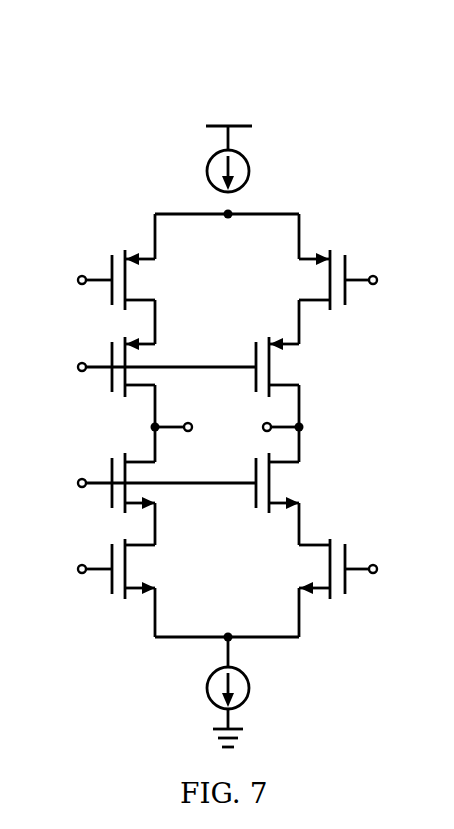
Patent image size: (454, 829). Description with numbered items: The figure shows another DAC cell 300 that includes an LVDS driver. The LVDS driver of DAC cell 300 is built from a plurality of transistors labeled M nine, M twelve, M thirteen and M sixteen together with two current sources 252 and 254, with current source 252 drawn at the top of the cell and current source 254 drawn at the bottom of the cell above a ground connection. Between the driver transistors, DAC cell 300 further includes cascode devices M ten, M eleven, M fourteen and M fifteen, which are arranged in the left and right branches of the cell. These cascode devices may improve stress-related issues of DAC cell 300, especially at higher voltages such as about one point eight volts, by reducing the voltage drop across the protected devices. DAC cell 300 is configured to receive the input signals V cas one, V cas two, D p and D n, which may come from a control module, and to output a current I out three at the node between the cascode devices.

The DAC cell 300 is at (214, 402).
The current source 252 is at (207, 170).
The current source 254 is at (207, 688).